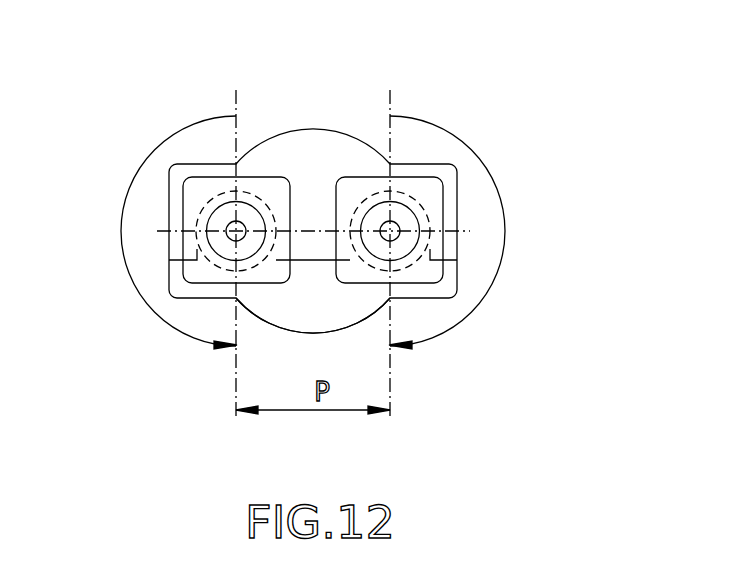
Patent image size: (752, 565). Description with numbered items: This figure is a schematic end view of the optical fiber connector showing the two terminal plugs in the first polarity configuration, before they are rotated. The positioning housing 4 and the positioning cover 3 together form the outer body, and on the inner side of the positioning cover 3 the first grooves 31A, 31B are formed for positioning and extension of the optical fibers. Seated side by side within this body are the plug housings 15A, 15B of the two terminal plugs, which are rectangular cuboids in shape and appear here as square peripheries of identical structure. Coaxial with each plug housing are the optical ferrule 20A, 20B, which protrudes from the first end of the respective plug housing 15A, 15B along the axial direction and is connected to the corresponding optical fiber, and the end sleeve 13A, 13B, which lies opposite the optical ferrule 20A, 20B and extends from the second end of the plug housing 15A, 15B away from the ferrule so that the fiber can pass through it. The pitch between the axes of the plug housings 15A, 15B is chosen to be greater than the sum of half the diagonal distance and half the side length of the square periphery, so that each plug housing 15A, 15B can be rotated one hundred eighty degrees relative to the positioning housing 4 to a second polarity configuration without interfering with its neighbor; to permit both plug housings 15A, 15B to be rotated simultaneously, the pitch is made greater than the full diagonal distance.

The positioning cover 3 is at (313, 128).
The positioning housing 4 is at (325, 333).
The end sleeve 13A is at (233, 200).
The end sleeve 13B is at (443, 200).
The plug housing 15A is at (203, 178).
The plug housing 15B is at (423, 178).
The optical ferrule 20A is at (232, 238).
The optical ferrule 20B is at (394, 238).
The first groove 31A is at (203, 268).
The first groove 31B is at (423, 268).